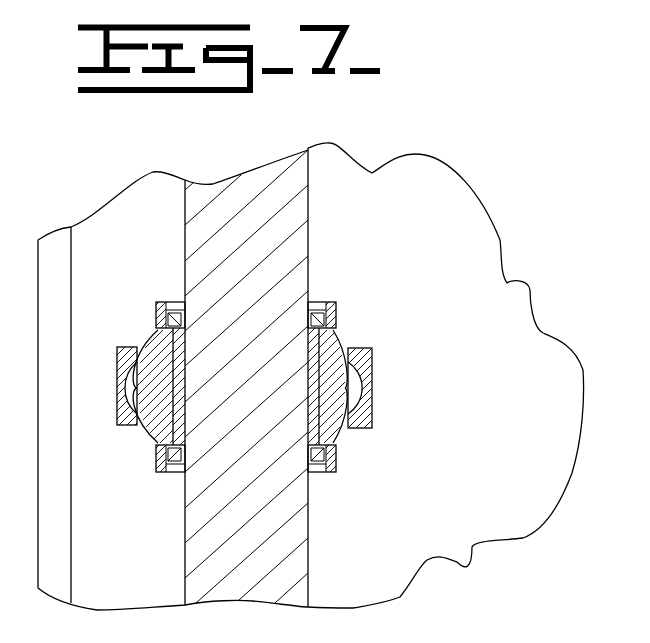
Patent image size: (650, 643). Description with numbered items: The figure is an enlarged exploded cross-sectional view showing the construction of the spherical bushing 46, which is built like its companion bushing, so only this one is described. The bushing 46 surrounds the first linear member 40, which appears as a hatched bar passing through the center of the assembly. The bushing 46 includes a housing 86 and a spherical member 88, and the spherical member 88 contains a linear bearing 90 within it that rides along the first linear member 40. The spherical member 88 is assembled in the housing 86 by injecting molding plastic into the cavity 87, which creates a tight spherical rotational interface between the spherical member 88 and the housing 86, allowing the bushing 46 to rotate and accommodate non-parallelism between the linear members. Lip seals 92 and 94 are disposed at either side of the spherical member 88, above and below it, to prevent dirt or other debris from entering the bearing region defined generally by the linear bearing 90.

The first linear member 40 is at (268, 228).
The spherical bushing 46 is at (337, 338).
The housing 86 is at (375, 377).
The cavity 87 is at (146, 432).
The spherical member 88 is at (343, 433).
The linear bearing 90 is at (158, 342).
The lip seal 92 is at (314, 300).
The lip seal 94 is at (325, 473).